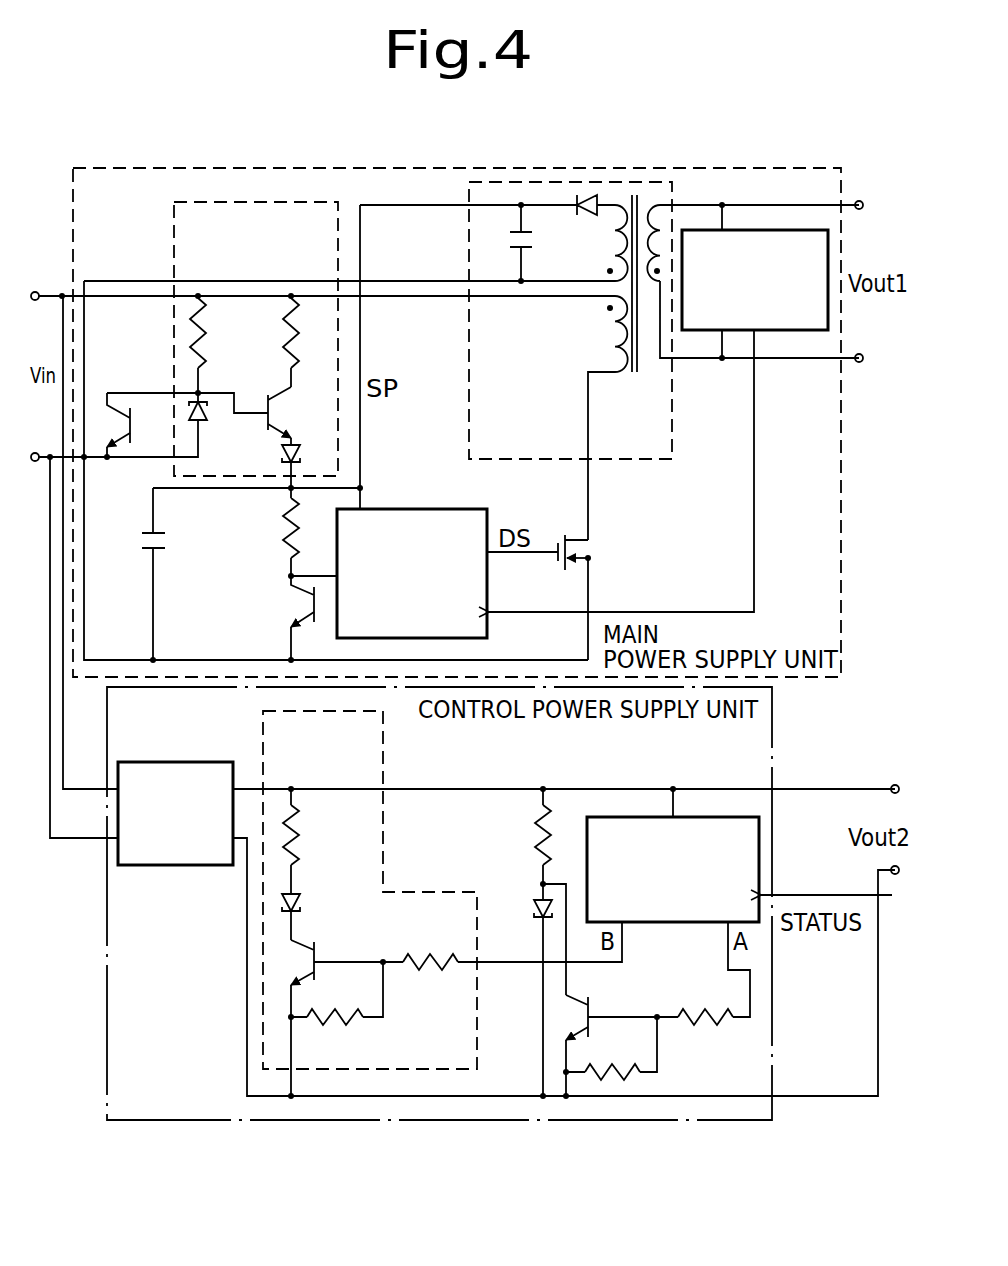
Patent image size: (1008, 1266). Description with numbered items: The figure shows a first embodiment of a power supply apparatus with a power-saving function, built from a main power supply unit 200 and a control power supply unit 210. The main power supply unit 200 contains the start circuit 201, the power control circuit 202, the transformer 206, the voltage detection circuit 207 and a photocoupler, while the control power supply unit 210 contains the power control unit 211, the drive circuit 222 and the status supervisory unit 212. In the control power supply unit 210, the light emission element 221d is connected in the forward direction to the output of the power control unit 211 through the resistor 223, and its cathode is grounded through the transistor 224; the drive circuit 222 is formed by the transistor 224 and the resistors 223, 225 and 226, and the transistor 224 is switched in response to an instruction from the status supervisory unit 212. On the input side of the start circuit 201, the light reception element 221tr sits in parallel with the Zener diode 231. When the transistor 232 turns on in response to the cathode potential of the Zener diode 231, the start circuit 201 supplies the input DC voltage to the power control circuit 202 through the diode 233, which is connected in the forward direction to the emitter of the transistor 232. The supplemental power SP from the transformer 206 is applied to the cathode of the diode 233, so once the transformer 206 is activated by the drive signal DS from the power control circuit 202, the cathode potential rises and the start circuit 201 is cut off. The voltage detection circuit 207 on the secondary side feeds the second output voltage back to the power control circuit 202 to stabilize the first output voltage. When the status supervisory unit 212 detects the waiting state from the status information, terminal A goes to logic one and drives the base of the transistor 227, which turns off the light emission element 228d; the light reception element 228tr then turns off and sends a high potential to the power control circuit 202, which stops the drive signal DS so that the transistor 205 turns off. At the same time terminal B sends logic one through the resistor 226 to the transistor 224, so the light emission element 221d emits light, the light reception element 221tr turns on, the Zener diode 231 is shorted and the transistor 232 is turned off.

The main power supply unit 200 is at (768, 170).
The start circuit 201 is at (174, 237).
The power control circuit 202 is at (455, 509).
The transistor 205 is at (597, 548).
The transformer 206 is at (620, 460).
The voltage detection circuit 207 is at (775, 230).
The control power supply unit 210 is at (775, 722).
The power control unit 211 is at (175, 762).
The status supervisory unit 212 is at (680, 922).
The light reception element 221tr is at (112, 414).
The light emission element 221d is at (299, 912).
The drive circuit 222 is at (385, 740).
The resistor 223 is at (300, 832).
The transistor 224 is at (308, 965).
The resistor 225 is at (322, 1024).
The resistor 226 is at (408, 970).
The transistor 227 is at (596, 1000).
The light reception element 228tr is at (302, 618).
The light emission element 228d is at (538, 899).
The Zener diode 231 is at (210, 413).
The transistor 232 is at (288, 395).
The diode 233 is at (294, 450).